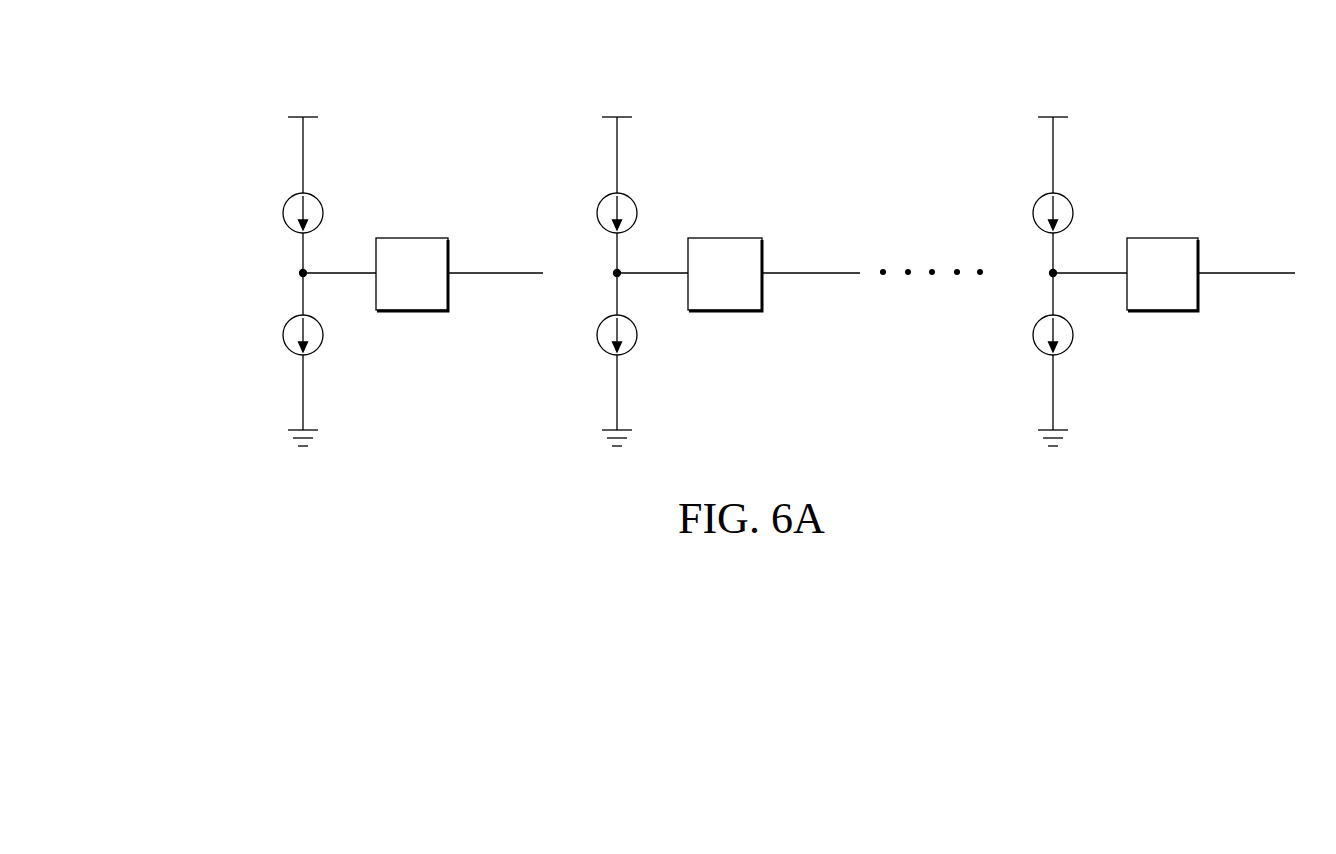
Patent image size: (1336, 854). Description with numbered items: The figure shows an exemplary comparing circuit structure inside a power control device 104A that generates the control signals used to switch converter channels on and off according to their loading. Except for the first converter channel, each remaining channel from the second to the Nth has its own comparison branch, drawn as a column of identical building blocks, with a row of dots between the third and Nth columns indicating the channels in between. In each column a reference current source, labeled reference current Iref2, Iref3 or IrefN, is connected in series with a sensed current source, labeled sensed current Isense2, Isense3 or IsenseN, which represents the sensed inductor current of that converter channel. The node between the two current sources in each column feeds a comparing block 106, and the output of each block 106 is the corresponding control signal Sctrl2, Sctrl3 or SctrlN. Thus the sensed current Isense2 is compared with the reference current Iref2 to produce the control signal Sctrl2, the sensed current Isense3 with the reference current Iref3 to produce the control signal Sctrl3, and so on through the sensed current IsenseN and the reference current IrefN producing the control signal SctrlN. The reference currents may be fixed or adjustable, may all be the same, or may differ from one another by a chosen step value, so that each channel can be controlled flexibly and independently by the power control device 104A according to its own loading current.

The power control device 104A is at (257, 69).
The comparator 106 is at (400, 238).
The reference current Iref2 is at (282, 213).
The reference current Iref3 is at (595, 213).
The reference current IrefN is at (1030, 213).
The sensed current Isense2 is at (272, 335).
The sensed current Isense3 is at (586, 335).
The sensed current IsenseN is at (1020, 335).
The control signal Sctrl2 is at (495, 258).
The control signal Sctrl3 is at (811, 258).
The control signal SctrlN is at (1246, 258).